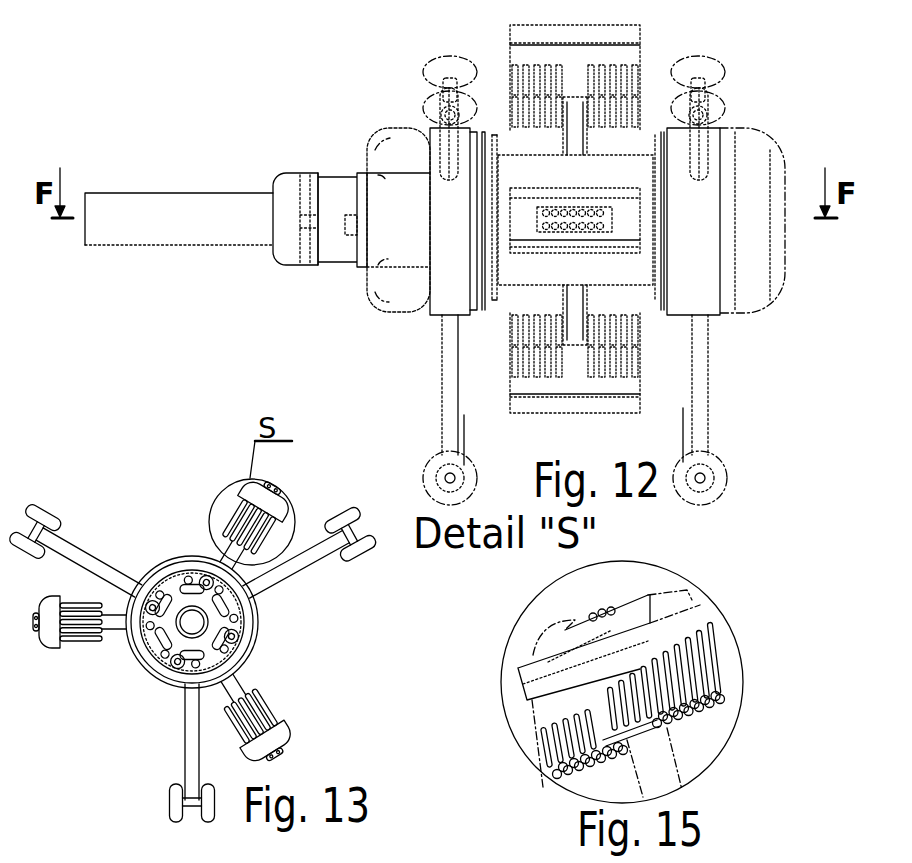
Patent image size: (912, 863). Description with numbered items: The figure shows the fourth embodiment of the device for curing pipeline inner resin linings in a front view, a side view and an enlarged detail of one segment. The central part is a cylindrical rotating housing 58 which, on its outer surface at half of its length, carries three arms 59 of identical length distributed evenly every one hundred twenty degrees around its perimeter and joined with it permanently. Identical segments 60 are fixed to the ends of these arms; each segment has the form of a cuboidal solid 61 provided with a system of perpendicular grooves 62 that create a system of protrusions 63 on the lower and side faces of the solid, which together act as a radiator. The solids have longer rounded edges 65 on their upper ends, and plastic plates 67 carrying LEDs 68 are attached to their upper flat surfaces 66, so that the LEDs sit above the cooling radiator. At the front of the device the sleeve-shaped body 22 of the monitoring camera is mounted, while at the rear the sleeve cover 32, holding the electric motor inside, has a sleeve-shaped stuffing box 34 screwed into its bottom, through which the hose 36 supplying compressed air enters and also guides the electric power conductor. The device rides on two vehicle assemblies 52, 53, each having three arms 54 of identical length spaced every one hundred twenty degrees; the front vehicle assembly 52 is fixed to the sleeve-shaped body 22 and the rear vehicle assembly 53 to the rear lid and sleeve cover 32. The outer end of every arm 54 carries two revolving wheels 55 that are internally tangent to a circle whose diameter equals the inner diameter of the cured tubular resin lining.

In FIG. 12, the sleeve-shaped body 22 is at (747, 157).
In FIG. 12, the sleeve cover 32 is at (338, 107).
In FIG. 12, the sleeve-shaped stuffing box 34 is at (265, 146).
In FIG. 12, the hose 36 is at (220, 246).
In FIG. 12, the vehicle assembly 52 is at (700, 418).
In FIG. 12, the vehicle assembly 53 is at (467, 463).
In FIG. 12, the arm 54 is at (450, 425).
In FIG. 13, the arm 54 is at (86, 563).
In FIG. 12, the revolving wheel 55 is at (438, 112).
In FIG. 13, the revolving wheel 55 is at (58, 520).
In FIG. 12, the rotating housing 58 is at (515, 270).
In FIG. 12, the arm 59 is at (578, 132).
In FIG. 12, the segment 60 is at (543, 97).
In FIG. 15, the segment 60 is at (700, 660).
In FIG. 15, the cuboidal solid 61 is at (540, 712).
In FIG. 13, the perpendicular groove 62 is at (86, 628).
In FIG. 13, the protrusion 63 is at (98, 638).
In FIG. 13, the rounded edge 65 is at (187, 696).
In FIG. 13, the upper flat surface 66 is at (340, 762).
In FIG. 13, the plastic plate 67 is at (264, 757).
In FIG. 15, the LED 68 is at (580, 627).